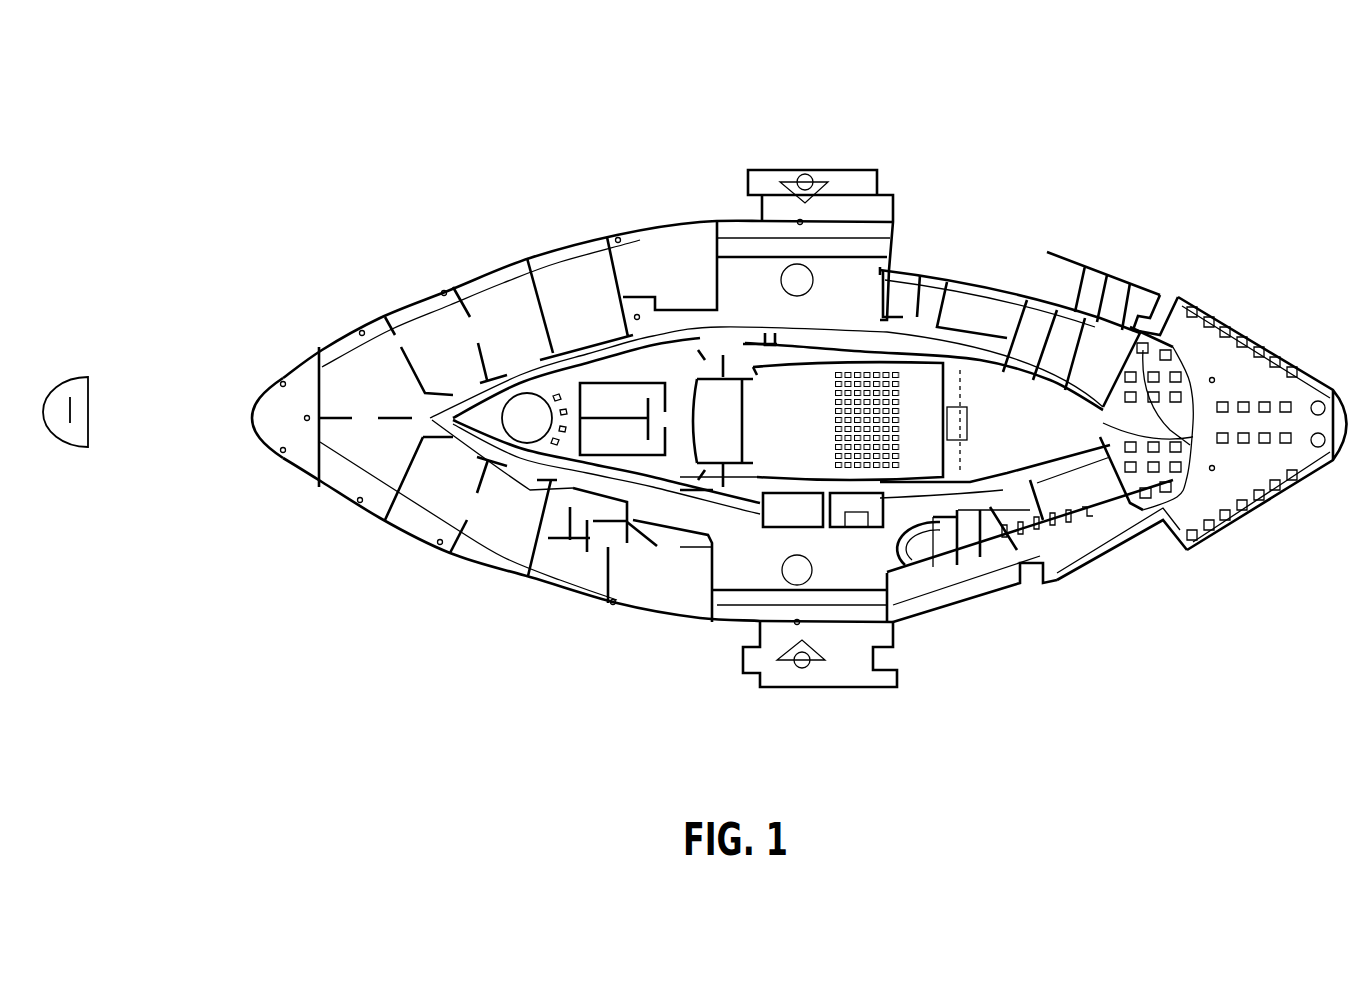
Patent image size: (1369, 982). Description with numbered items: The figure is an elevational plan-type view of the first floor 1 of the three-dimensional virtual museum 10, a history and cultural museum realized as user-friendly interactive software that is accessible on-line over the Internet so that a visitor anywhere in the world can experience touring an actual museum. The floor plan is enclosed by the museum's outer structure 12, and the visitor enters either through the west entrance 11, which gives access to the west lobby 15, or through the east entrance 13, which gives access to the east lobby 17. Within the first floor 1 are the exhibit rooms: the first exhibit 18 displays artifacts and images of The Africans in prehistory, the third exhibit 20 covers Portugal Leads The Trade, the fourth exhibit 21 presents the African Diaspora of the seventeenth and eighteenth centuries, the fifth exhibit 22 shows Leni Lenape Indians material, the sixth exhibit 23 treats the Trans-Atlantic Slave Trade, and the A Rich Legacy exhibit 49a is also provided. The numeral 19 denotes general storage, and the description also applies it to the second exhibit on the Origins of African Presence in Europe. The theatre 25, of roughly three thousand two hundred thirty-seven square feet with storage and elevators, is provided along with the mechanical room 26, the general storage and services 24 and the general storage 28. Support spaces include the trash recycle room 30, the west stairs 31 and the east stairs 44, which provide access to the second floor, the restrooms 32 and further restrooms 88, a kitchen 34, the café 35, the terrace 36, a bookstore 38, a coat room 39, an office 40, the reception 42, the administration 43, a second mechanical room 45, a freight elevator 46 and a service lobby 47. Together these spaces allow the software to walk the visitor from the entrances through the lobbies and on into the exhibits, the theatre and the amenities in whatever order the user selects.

The first floor 1 is at (247, 454).
The 3D virtual museum 10 is at (256, 101).
The west entrance 11 is at (865, 190).
The outer structure 12 is at (242, 406).
The east entrance 13 is at (765, 688).
The west lobby 15 is at (856, 280).
The east lobby 17 is at (843, 567).
The first exhibit 18 is at (463, 577).
The general storage 19 is at (420, 540).
The third exhibit 20 is at (345, 512).
The fourth exhibit 21 is at (352, 335).
The fifth exhibit 22 is at (420, 297).
The sixth exhibit 23 is at (490, 270).
The general storage and services 24 is at (565, 255).
The theatre 25 is at (1017, 522).
The mechanical room 26 is at (665, 225).
The general storage 28 is at (905, 265).
The trash recycle room 30 is at (935, 300).
The west stairs 31 is at (985, 280).
The restrooms 32 is at (1085, 302).
The kitchen 34 is at (1130, 322).
The café 35 is at (1170, 330).
The terrace 36 is at (1240, 300).
The bookstore 38 is at (1083, 518).
The coat room 39 is at (985, 560).
The office 40 is at (927, 449).
The reception 42 is at (920, 562).
The administration 43 is at (660, 617).
The east stairs 44 is at (600, 560).
The mechanical room 45 is at (565, 560).
The freight elevator 46 is at (615, 587).
The service lobby 47 is at (505, 580).
The A Rich Legacy exhibit 49a is at (500, 418).
The restrooms 88 is at (622, 455).